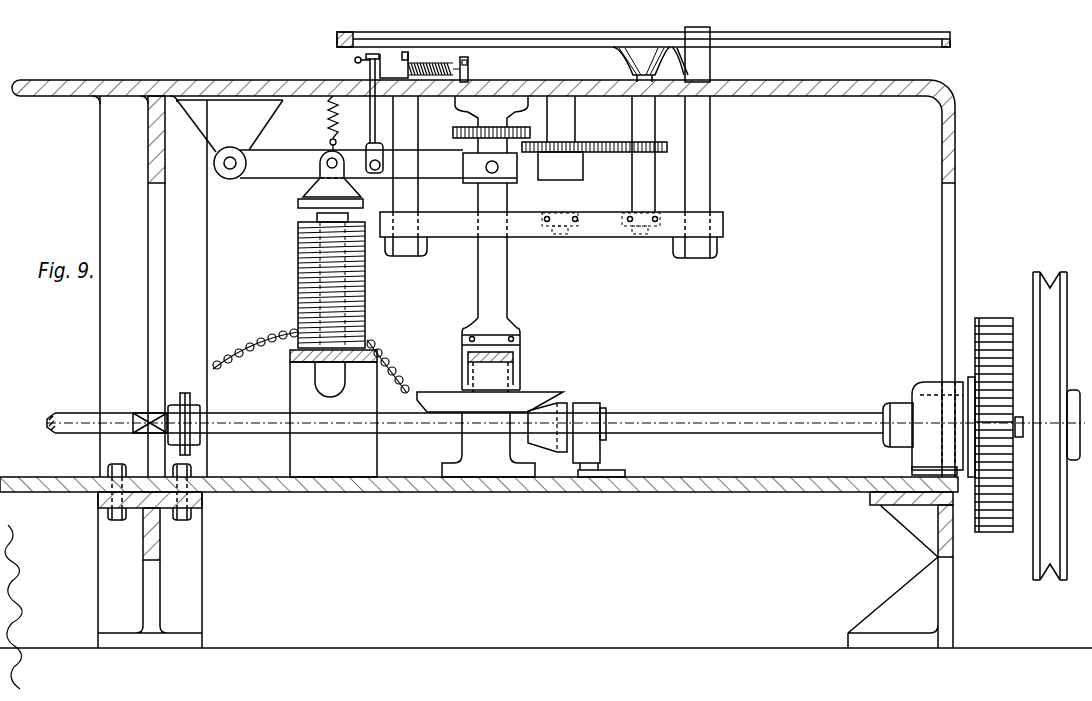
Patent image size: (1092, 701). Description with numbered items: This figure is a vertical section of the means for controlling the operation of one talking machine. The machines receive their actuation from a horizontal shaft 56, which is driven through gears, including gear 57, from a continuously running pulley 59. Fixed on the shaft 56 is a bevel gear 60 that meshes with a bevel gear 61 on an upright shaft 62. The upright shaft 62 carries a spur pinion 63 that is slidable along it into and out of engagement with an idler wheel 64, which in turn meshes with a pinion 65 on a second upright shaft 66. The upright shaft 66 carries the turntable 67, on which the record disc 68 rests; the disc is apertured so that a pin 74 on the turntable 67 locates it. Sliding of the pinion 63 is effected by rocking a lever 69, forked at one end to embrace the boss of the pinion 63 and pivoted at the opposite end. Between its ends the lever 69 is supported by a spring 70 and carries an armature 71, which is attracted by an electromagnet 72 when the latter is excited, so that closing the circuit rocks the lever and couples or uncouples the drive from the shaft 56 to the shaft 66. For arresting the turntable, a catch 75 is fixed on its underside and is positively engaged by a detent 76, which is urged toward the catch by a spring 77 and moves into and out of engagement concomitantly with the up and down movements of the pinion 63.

The shaft 56 is at (748, 414).
The gear 57 is at (996, 318).
The pulley 59 is at (1034, 586).
The bevel gear 60 is at (553, 412).
The bevel gear 61 is at (528, 400).
The upright shaft 62 is at (498, 292).
The spur pinion 63 is at (460, 128).
The idler wheel 64 is at (588, 142).
The pinion 65 is at (664, 154).
The upright shaft 66 is at (650, 237).
The turntable 67 is at (825, 47).
The record disc 68 is at (896, 45).
The lever 69 is at (365, 165).
The spring 70 is at (327, 124).
The armature 71 is at (298, 205).
The electromagnet 72 is at (347, 304).
The pin 74 is at (700, 47).
The catch 75 is at (364, 56).
The detent 76 is at (371, 132).
The spring 77 is at (470, 64).